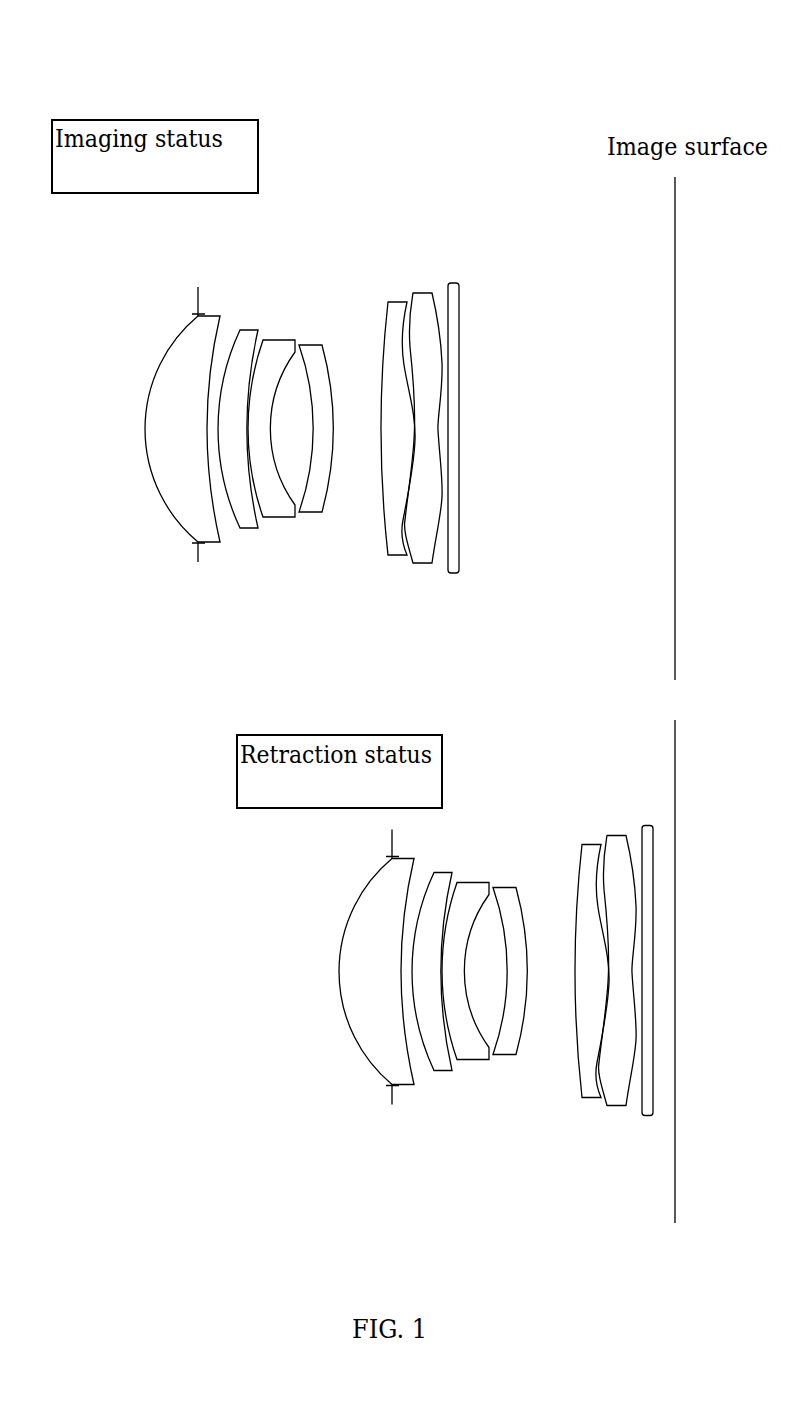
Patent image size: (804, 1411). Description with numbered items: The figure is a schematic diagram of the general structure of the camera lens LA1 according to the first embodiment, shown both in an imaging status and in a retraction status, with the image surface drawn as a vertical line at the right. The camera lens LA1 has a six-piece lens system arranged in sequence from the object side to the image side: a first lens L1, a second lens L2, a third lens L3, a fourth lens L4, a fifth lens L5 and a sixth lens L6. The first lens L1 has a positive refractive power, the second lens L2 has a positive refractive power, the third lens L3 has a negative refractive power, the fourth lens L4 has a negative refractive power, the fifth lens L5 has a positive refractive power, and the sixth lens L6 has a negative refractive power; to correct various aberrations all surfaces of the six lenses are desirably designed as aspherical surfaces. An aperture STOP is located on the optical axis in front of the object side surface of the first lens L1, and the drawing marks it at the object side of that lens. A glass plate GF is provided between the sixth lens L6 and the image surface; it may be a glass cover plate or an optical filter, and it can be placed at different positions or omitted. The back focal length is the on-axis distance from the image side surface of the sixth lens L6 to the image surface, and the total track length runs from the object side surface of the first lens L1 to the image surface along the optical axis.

The camera lens LA1 is at (376, 53).
The first lens L1 is at (184, 412).
The second lens L2 is at (238, 413).
The third lens L3 is at (271, 411).
The fourth lens L4 is at (316, 408).
The fifth lens L5 is at (389, 413).
The sixth lens L6 is at (424, 413).
The glass plate GF is at (455, 412).
The aperture STOP is at (195, 440).